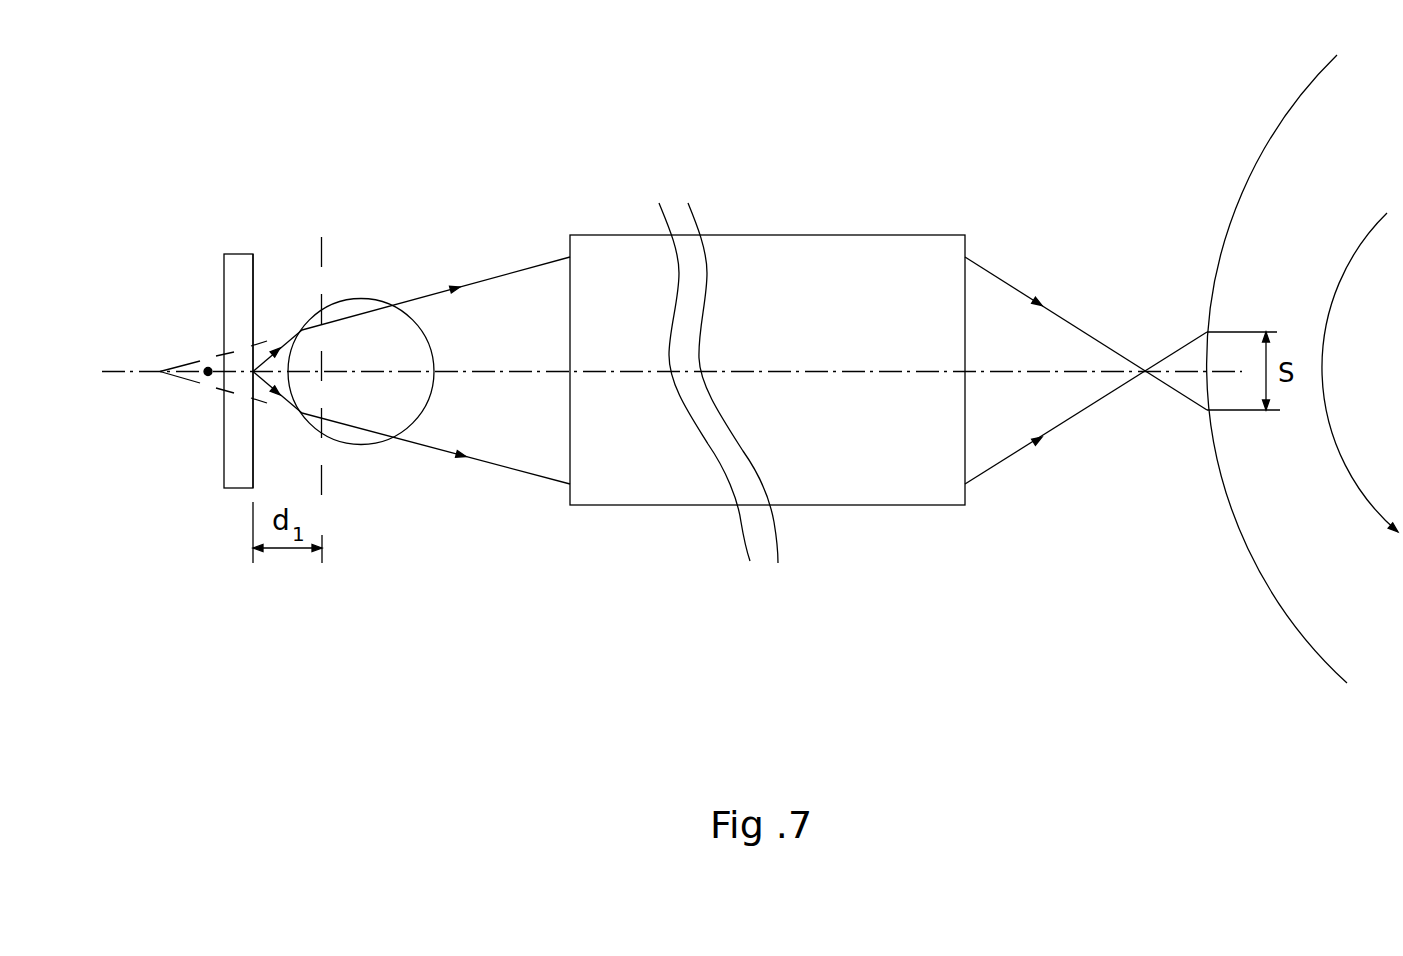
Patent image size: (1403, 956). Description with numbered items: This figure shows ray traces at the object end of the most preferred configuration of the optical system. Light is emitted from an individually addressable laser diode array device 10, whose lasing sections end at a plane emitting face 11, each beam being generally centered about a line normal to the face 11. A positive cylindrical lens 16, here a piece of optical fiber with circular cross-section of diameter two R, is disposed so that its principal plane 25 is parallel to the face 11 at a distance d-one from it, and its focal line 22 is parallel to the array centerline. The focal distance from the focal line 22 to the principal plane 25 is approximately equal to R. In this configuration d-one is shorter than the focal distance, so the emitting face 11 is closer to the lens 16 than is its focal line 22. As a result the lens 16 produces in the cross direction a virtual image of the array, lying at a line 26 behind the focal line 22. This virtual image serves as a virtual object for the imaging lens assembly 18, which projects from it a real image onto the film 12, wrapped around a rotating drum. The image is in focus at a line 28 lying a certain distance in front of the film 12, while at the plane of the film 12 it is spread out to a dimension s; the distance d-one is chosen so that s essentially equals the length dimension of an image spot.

The individually addressable laser diode array device 10 is at (242, 252).
The plane face 11 is at (253, 283).
The film 12 is at (1295, 142).
The positive cylindrical lens 16 is at (373, 302).
The imaging lens assembly 18 is at (799, 235).
The focal line 22 is at (207, 369).
The principal plane 25 is at (323, 493).
The virtual image line 26 is at (158, 373).
The focus line 28 is at (1146, 371).